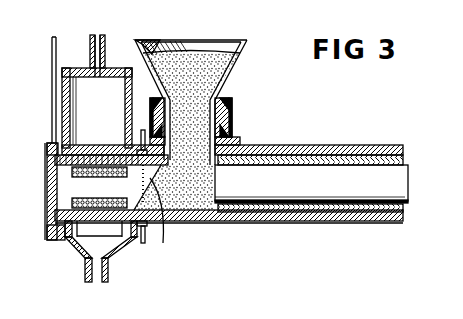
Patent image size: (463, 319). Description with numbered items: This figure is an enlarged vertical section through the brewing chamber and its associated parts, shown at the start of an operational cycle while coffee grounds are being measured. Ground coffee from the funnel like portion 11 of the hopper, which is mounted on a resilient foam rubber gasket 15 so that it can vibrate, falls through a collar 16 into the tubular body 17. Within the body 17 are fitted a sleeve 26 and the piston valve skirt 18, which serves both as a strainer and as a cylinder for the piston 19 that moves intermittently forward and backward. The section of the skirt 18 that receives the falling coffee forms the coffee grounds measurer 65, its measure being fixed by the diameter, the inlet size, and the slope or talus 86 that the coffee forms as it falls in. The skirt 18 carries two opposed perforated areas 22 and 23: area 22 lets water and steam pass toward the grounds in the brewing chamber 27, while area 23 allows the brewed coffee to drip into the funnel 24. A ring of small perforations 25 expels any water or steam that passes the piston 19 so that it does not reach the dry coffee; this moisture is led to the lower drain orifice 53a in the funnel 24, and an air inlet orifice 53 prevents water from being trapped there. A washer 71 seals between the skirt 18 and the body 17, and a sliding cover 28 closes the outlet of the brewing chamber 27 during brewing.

The funnel like portion 11 is at (211, 45).
The foam rubber gasket 15 is at (221, 104).
The collar 16 is at (231, 119).
The tubular body 17 is at (292, 152).
The piston valve skirt 18 is at (206, 212).
The piston 19 is at (368, 194).
The perforated area 22 is at (101, 157).
The perforated area 23 is at (84, 221).
The funnel 24 is at (102, 248).
The small perforations 25 is at (146, 172).
The sleeve 26 is at (355, 163).
The brewing chamber 27 is at (111, 106).
The cover 28 is at (48, 187).
The air inlet orifice 53 is at (140, 130).
The lower drain orifice 53a is at (145, 246).
The coffee grounds measurer 65 is at (195, 198).
The washer 71 is at (55, 156).
The talus 86 is at (163, 243).